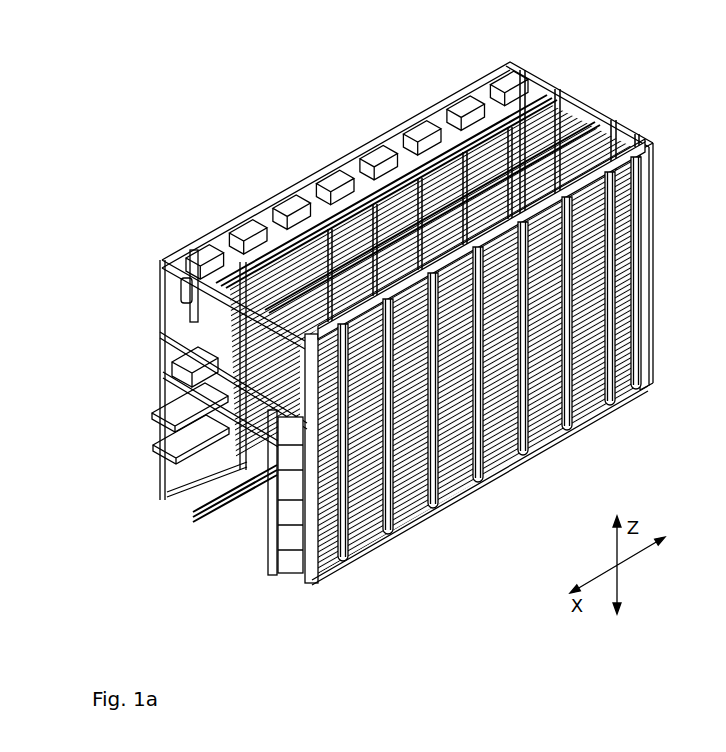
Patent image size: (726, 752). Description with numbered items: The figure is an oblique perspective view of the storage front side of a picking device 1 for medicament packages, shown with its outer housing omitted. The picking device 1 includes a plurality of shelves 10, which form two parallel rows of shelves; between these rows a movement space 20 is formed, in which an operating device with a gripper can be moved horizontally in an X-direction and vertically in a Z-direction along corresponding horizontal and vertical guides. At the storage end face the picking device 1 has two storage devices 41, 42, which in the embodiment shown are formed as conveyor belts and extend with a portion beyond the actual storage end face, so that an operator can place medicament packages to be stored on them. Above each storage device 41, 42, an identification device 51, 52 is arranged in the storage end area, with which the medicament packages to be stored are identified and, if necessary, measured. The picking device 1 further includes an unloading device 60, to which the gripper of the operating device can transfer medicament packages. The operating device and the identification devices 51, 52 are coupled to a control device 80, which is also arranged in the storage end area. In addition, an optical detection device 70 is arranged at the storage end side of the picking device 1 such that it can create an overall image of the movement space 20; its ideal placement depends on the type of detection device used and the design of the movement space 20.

The picking device 1 is at (283, 114).
The shelves 10 is at (525, 420).
The movement space 20 is at (255, 527).
The storage device 41 is at (183, 410).
The storage device 42 is at (181, 437).
The identification device 51 is at (258, 488).
The identification device 52 is at (250, 478).
The unloading device 60 is at (178, 378).
The optical detection device 70 is at (192, 307).
The control device 80 is at (290, 490).